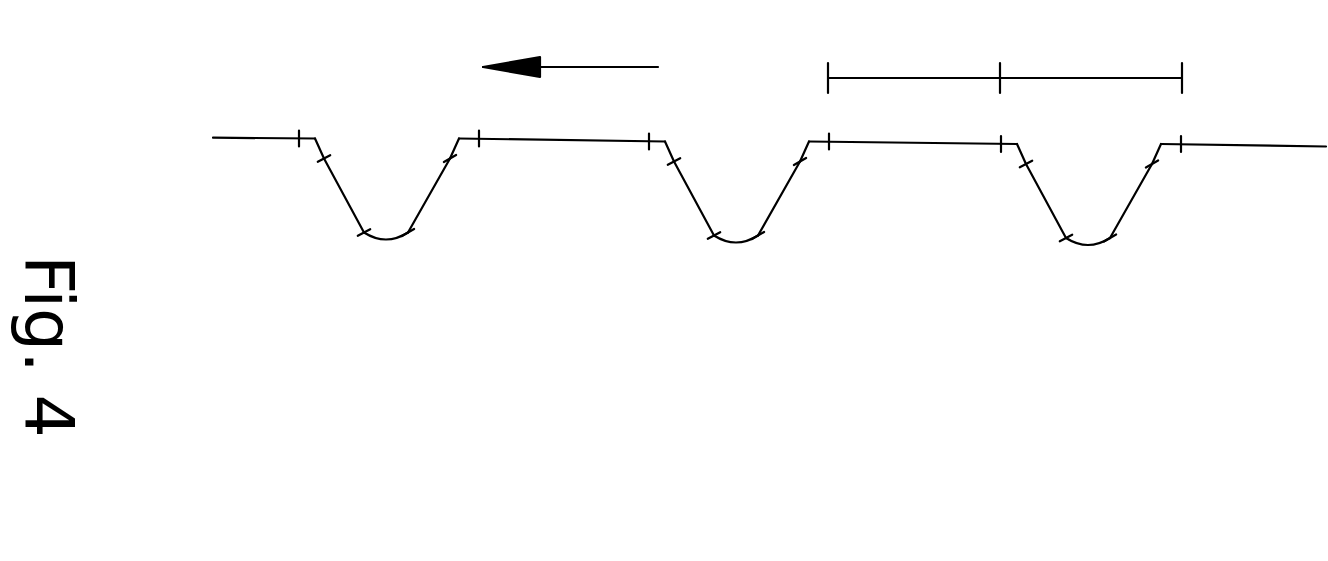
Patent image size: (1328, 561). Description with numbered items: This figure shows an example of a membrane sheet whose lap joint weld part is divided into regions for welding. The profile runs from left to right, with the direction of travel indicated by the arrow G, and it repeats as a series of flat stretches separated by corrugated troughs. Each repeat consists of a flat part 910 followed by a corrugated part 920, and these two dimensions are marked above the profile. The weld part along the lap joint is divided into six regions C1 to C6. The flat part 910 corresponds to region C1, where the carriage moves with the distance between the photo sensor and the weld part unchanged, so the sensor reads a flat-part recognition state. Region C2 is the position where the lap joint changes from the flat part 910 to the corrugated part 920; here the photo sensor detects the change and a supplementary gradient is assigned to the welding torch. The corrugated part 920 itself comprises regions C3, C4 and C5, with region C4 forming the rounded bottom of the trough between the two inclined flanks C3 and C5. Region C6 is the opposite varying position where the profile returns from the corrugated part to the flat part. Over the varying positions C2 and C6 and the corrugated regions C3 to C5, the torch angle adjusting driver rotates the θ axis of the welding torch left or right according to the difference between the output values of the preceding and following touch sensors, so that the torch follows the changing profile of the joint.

The region C1 is at (769, 157).
The region C2 is at (824, 163).
The region C3 is at (789, 196).
The region C4 is at (740, 255).
The region C5 is at (686, 200).
The region C6 is at (652, 165).
The flat part 910 is at (914, 88).
The corrugated part 920 is at (1091, 88).
The direction arrow G is at (533, 68).